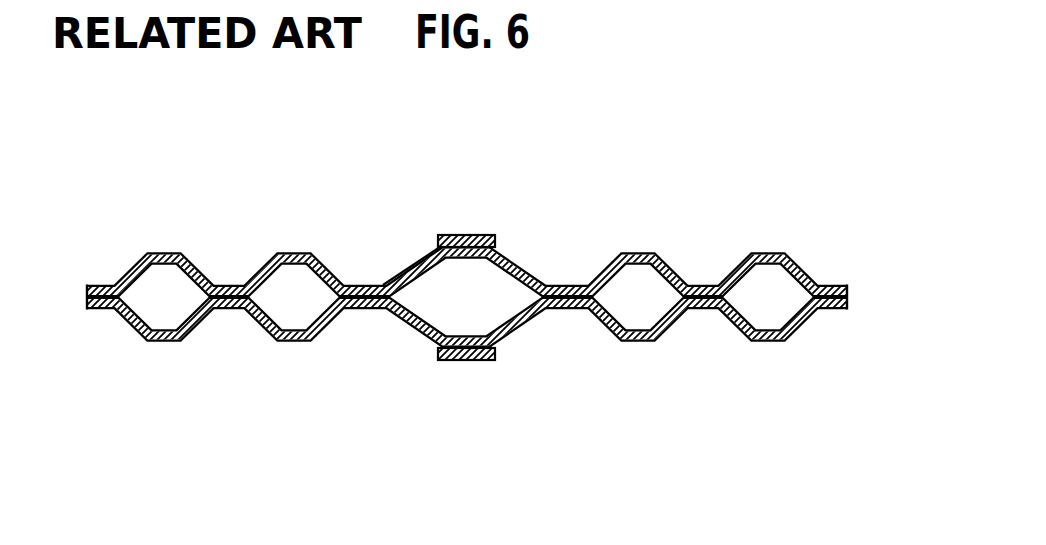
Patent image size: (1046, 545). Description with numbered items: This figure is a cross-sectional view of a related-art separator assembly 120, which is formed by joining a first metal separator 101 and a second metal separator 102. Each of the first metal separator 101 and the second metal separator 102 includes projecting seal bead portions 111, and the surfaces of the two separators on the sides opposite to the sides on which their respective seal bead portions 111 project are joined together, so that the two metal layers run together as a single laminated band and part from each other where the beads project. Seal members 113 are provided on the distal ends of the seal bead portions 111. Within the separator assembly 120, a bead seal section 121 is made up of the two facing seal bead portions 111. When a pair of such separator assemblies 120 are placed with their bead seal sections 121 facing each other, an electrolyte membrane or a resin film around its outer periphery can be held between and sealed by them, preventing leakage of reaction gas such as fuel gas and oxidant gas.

The first metal separator 101 is at (106, 320).
The second metal separator 102 is at (106, 273).
The seal bead portion 111 is at (428, 275).
The seal member 113 is at (476, 235).
The separator assembly 120 is at (467, 290).
The bead seal section 121 is at (404, 257).